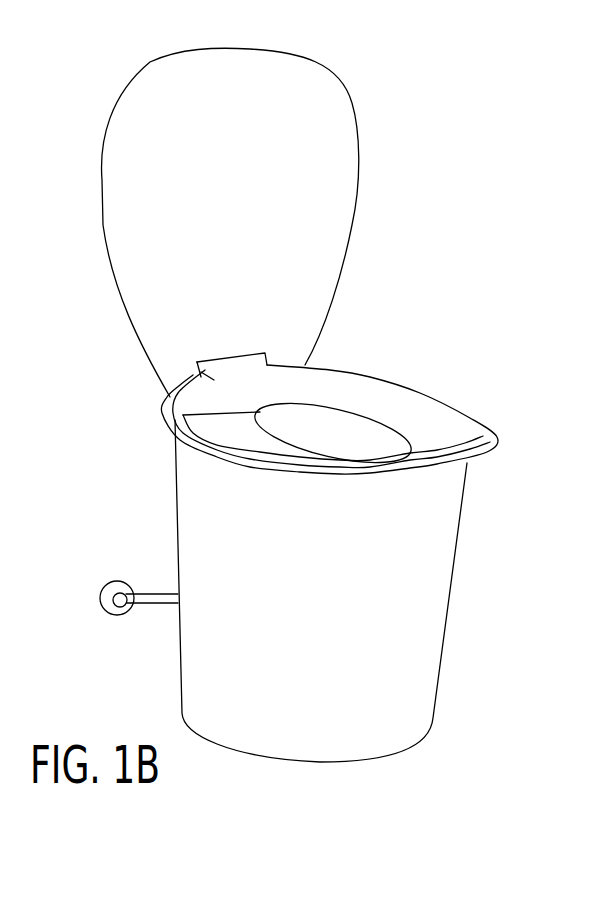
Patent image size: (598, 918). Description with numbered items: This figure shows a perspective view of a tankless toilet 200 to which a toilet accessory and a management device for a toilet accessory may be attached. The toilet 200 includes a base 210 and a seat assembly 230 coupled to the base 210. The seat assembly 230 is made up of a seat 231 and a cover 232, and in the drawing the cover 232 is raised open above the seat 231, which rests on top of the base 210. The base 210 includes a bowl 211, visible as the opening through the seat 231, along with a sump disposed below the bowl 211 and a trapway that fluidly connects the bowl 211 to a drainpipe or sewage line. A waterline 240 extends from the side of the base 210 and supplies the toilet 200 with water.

The tankless toilet 200 is at (428, 88).
The base 210 is at (474, 622).
The bowl 211 is at (283, 436).
The seat assembly 230 is at (353, 394).
The seat 231 is at (442, 408).
The cover 232 is at (338, 182).
The waterline 240 is at (158, 603).